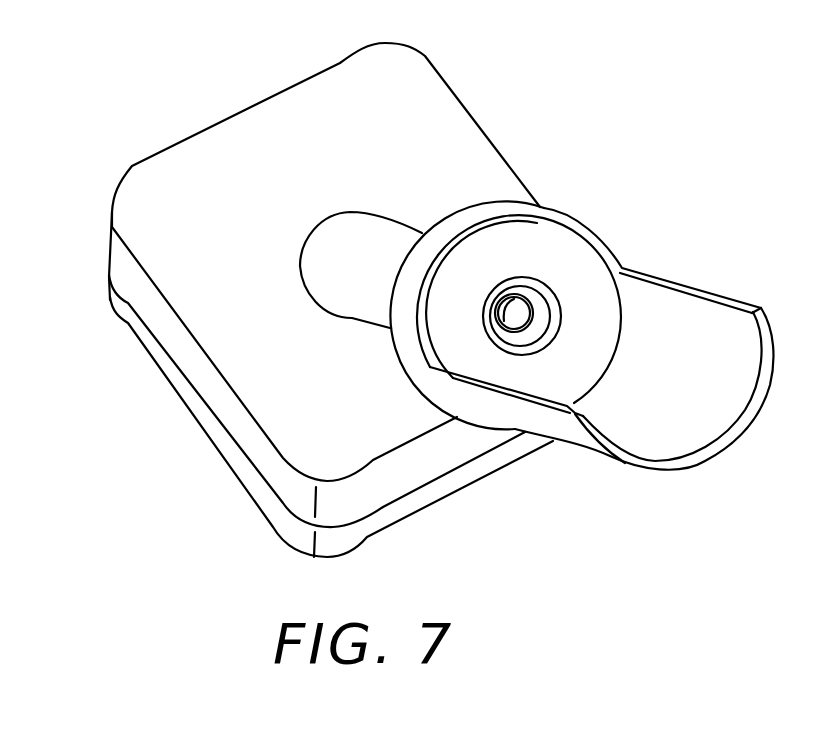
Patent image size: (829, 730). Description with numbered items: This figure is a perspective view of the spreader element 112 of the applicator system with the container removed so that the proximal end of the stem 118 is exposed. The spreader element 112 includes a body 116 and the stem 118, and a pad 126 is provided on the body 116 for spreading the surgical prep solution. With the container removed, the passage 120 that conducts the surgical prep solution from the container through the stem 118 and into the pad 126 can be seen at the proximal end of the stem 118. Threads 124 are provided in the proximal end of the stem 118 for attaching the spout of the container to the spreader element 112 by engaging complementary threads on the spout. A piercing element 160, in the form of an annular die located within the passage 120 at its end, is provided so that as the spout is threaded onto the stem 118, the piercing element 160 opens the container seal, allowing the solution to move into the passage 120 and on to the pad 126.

The spreader element 112 is at (155, 441).
The body 116 is at (175, 178).
The stem 118 is at (338, 237).
The passage 120 is at (512, 312).
The threads 124 is at (538, 337).
The pad 126 is at (422, 496).
The piercing element 160 is at (533, 316).